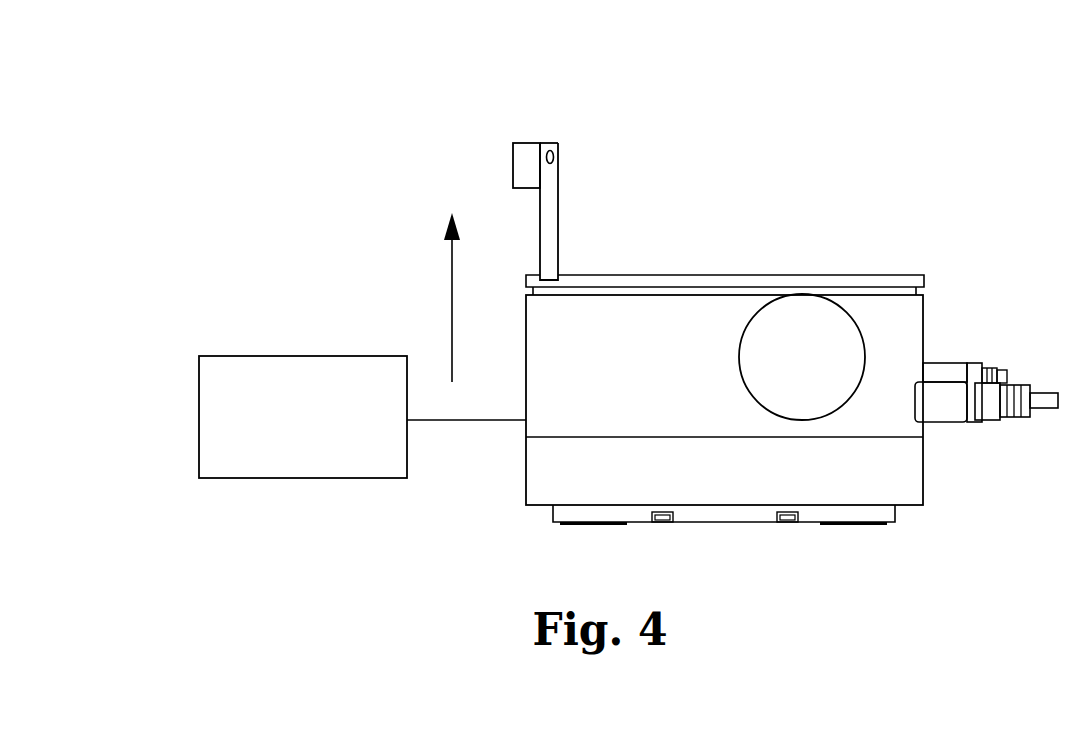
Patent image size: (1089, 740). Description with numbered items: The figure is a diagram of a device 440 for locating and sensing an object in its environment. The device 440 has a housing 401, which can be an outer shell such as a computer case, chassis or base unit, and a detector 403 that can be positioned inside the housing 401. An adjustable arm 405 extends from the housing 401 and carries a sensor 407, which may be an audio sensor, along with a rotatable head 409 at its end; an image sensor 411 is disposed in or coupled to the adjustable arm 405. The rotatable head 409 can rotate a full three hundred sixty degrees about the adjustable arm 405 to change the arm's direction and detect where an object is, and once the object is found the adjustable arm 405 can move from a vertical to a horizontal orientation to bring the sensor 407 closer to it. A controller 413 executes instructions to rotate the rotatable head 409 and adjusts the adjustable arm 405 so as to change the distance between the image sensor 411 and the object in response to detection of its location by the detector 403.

The device 440 is at (372, 93).
The housing 401 is at (742, 275).
The detector 403 is at (833, 345).
The adjustable arm 405 is at (558, 220).
The sensor 407 is at (556, 157).
The rotatable head 409 is at (552, 143).
The image sensor 411 is at (522, 143).
The controller 413 is at (199, 409).